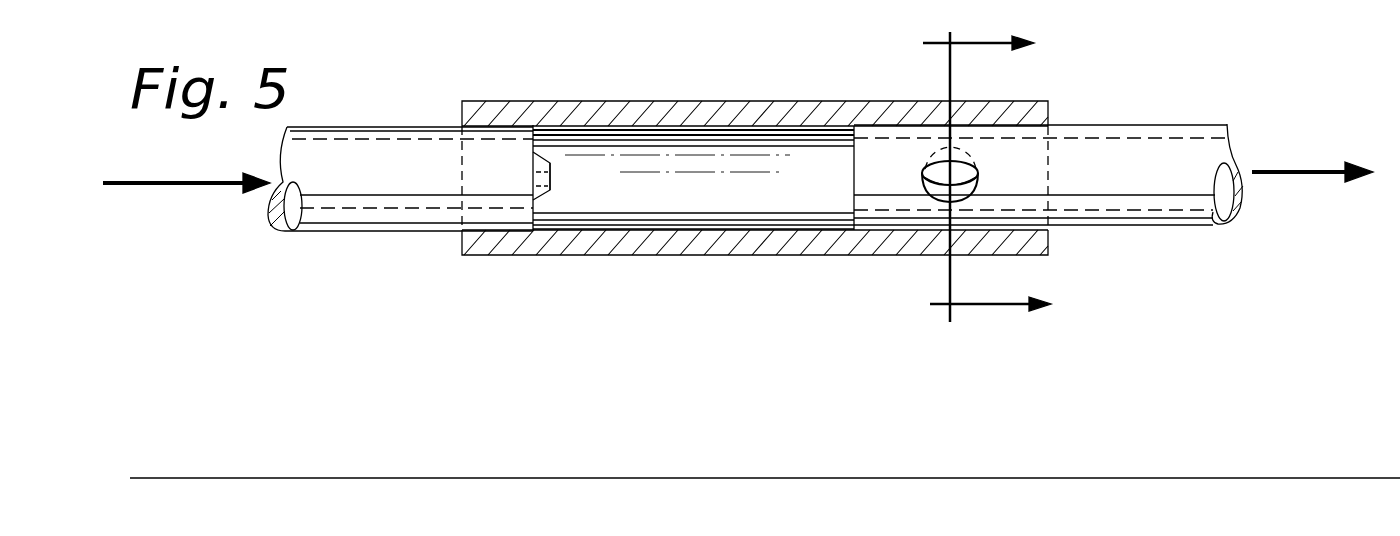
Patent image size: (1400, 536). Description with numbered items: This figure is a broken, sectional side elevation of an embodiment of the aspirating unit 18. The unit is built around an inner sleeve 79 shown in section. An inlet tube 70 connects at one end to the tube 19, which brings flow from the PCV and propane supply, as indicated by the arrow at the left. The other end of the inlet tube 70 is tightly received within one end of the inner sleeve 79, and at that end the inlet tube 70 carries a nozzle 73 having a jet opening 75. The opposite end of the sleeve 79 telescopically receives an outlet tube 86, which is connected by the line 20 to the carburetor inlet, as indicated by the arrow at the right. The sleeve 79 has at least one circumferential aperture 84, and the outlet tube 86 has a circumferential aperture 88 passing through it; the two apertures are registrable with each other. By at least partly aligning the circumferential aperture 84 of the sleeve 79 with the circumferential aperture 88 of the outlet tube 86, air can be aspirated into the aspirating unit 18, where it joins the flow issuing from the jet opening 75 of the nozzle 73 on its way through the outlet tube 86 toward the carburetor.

The aspirating unit 18 is at (1110, 52).
The tube 19 is at (133, 183).
The line 20 is at (1283, 172).
The inlet tube 70 is at (403, 133).
The nozzle 73 is at (537, 157).
The jet opening 75 is at (553, 178).
The inner sleeve 79 is at (690, 105).
The circumferential aperture 84 is at (930, 150).
The outlet tube 86 is at (1165, 128).
The circumferential aperture 88 is at (935, 201).